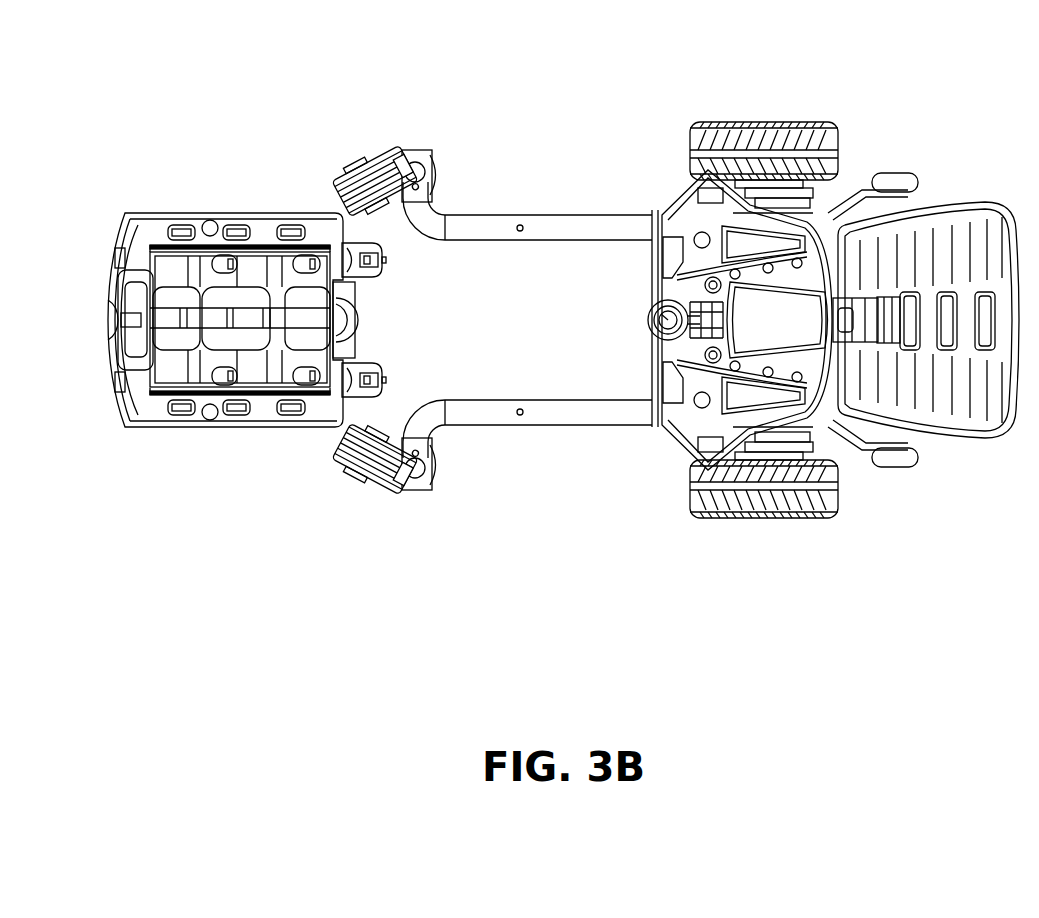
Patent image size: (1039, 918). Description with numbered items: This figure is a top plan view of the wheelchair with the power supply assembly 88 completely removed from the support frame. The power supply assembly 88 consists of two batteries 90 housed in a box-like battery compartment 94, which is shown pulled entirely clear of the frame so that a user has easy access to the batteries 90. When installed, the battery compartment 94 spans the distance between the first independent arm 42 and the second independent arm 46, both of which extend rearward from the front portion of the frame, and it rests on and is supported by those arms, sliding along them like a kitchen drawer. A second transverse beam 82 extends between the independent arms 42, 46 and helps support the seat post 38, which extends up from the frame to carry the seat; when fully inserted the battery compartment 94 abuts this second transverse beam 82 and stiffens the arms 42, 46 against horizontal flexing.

The power supply assembly 88 is at (216, 158).
The battery compartment 94 is at (124, 217).
The batteries 90 is at (280, 360).
The second independent arm 46 is at (540, 227).
The first independent arm 42 is at (550, 413).
The seat post 38 is at (650, 305).
The second transverse beam 82 is at (658, 358).